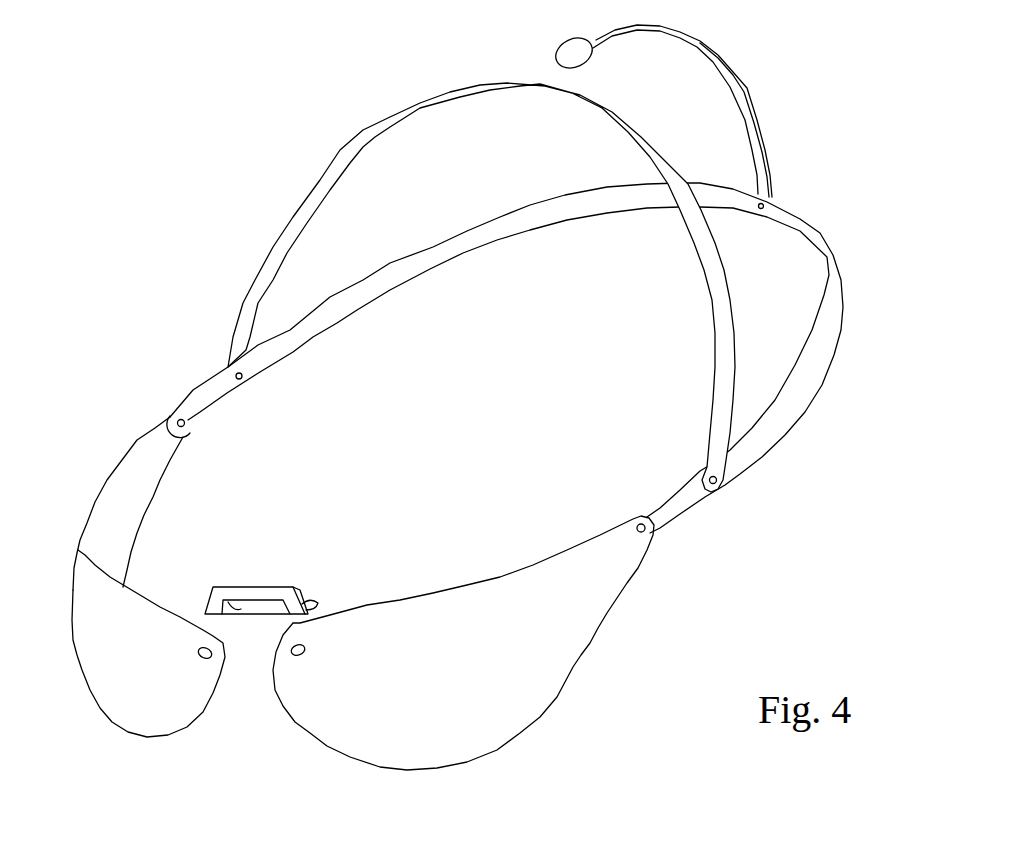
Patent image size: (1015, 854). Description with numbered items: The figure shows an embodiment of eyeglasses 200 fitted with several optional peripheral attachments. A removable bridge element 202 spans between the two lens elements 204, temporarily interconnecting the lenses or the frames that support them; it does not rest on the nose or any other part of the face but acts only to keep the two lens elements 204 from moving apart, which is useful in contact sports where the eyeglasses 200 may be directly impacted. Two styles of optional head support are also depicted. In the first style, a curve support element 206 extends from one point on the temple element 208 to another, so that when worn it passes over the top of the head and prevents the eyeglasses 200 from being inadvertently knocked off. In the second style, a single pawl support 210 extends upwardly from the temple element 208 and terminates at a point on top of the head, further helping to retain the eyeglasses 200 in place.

The eyeglasses 200 is at (878, 118).
The removable bridge element 202 is at (270, 570).
The lens elements 204 is at (363, 664).
The curve support element 206 is at (522, 287).
The temple element 208 is at (458, 386).
The pawl support 210 is at (729, 118).